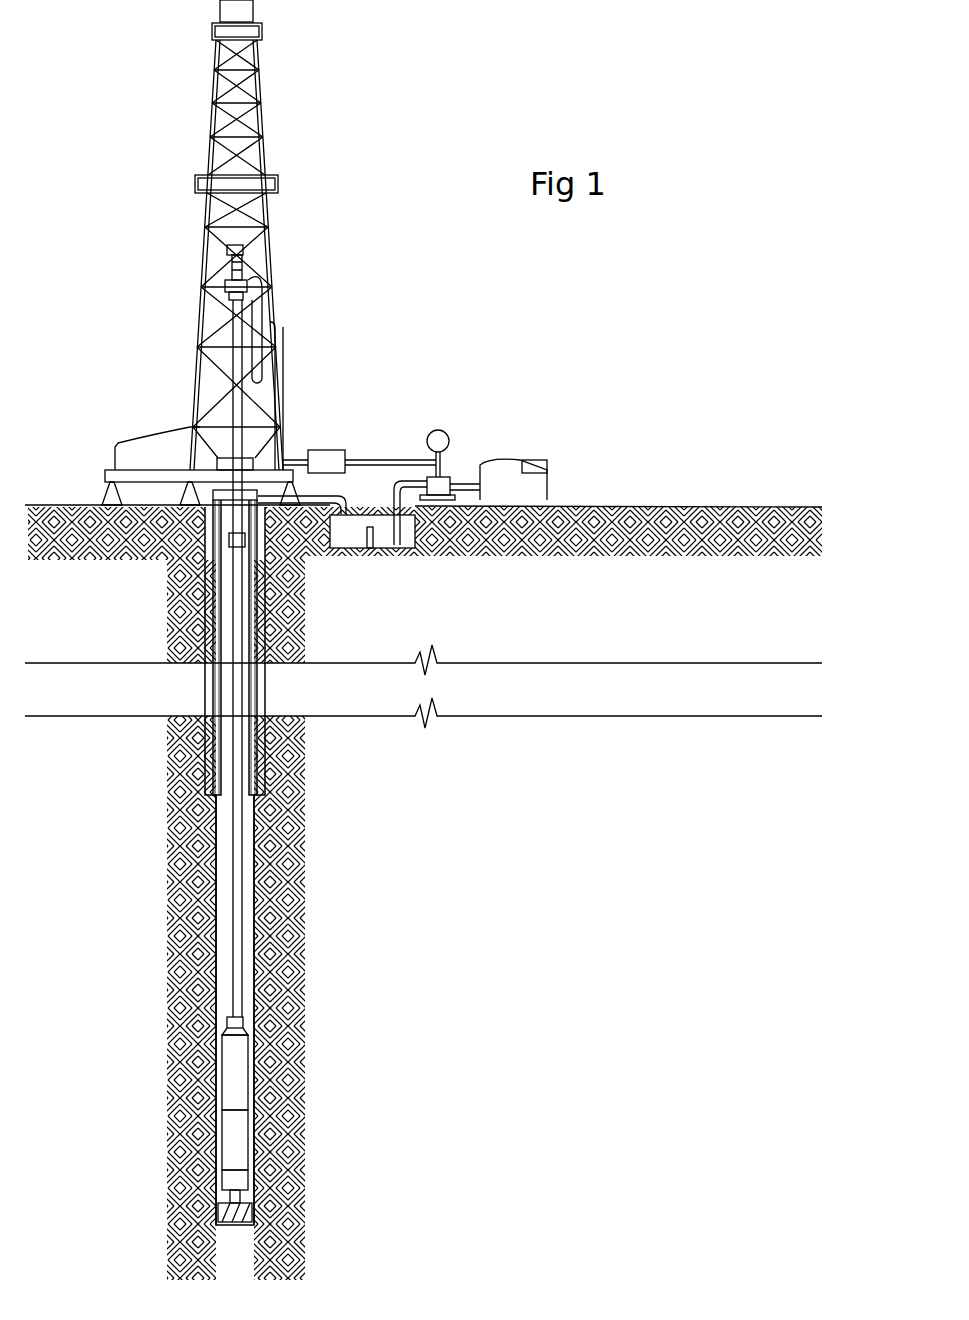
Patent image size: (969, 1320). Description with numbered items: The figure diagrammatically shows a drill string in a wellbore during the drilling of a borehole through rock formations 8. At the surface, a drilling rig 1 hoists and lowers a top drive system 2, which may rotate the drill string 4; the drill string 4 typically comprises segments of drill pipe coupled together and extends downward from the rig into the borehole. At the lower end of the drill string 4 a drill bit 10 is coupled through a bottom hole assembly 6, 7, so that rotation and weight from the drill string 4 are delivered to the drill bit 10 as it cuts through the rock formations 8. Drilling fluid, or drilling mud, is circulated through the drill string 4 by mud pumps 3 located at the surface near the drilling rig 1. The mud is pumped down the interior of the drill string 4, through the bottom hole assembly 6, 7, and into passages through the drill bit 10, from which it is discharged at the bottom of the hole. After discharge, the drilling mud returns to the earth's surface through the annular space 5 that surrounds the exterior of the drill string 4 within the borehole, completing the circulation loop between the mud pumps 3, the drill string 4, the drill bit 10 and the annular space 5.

The drilling rig 1 is at (273, 253).
The top drive system 2 is at (226, 290).
The mud pumps 3 is at (507, 456).
The drill string 4 is at (233, 882).
The annular space 5 is at (223, 948).
The bottom hole assembly 6 is at (233, 1085).
The bottom hole assembly 7 is at (232, 1148).
The rock formations 8 is at (395, 980).
The drill bit 10 is at (222, 1206).